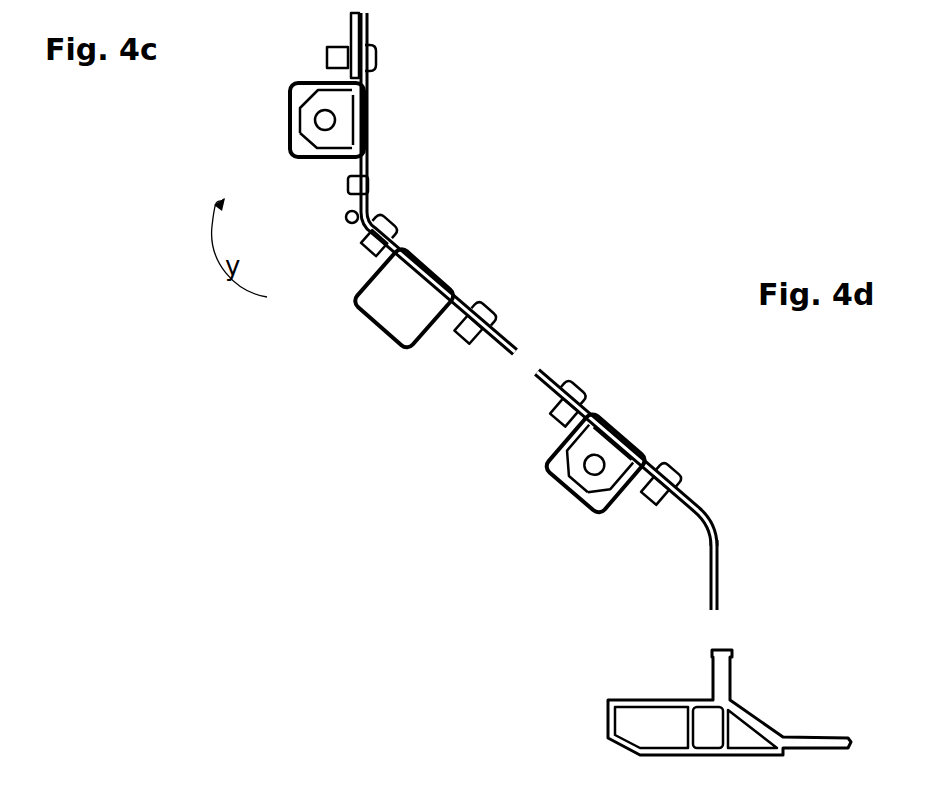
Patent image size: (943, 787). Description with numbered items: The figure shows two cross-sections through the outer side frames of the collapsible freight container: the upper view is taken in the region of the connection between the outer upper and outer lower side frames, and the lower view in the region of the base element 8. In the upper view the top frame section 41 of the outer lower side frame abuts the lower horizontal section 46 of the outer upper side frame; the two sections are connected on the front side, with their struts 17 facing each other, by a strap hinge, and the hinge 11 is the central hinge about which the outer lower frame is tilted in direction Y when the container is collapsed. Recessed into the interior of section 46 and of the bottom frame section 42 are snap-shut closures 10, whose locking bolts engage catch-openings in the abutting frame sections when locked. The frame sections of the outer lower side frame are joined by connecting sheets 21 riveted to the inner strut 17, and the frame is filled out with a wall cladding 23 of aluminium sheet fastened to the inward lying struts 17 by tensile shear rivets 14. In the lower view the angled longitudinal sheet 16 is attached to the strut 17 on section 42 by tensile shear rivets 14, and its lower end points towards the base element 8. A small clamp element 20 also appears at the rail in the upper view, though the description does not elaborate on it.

In FIG. 4d, the base element 8 is at (610, 699).
In FIG. 4c, the snap-shut closure 10 is at (318, 138).
In FIG. 4d, the snap-shut closure 10 is at (580, 470).
In FIG. 4c, the hinge 11 is at (347, 219).
In FIG. 4c, the tensile shear rivets 14 is at (372, 47).
In FIG. 4d, the tensile shear rivets 14 is at (551, 410).
In FIG. 4d, the angled longitudinal sheet 16 is at (713, 560).
In FIG. 4c, the strut 17 is at (368, 28).
In FIG. 4d, the strut 17 is at (563, 370).
In FIG. 4c, the clamp 20 is at (348, 186).
In FIG. 4d, the connecting sheet 21 is at (543, 377).
In FIG. 4c, the wall cladding 23 is at (350, 17).
In FIG. 4c, the top frame section 41 is at (380, 325).
In FIG. 4d, the bottom frame section 42 is at (585, 505).
In FIG. 4c, the lower horizontal section 46 is at (289, 90).